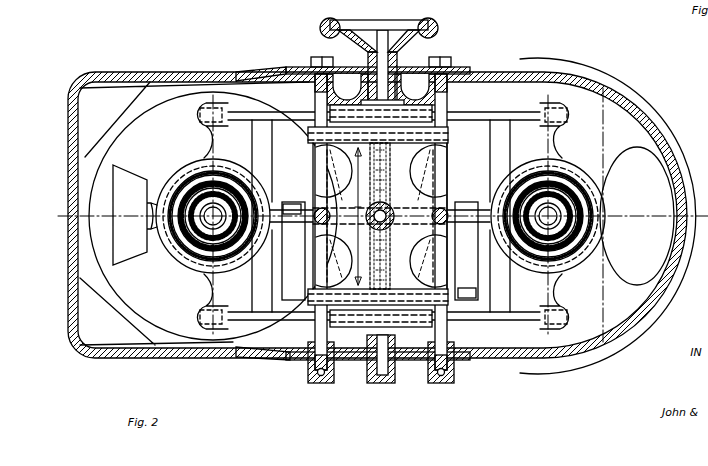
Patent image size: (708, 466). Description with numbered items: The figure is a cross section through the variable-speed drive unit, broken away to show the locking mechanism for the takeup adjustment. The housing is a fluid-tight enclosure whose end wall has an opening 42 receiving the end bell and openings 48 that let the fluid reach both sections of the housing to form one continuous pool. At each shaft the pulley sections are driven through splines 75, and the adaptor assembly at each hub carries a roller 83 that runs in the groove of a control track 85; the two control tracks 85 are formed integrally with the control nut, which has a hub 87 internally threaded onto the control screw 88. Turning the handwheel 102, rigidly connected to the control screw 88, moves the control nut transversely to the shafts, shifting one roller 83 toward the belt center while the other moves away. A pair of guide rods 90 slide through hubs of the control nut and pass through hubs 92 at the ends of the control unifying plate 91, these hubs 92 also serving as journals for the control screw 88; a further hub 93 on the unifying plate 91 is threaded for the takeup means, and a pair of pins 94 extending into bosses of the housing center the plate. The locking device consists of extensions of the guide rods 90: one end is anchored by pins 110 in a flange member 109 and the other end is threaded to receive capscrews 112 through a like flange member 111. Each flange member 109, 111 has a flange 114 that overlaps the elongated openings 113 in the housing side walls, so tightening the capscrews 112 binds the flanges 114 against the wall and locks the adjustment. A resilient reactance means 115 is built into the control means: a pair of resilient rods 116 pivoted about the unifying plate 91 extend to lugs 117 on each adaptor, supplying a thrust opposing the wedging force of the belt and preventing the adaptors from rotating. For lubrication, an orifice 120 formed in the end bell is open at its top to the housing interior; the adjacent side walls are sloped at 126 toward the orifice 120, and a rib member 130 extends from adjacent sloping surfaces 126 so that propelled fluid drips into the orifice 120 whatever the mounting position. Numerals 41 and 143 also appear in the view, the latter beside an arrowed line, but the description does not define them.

The opening 42 is at (178, 100).
The openings 48 is at (652, 156).
The splines 75 is at (233, 193).
The roller 83 is at (378, 216).
The control track 85 is at (300, 273).
The hub 87 is at (380, 225).
The control screw 88 is at (388, 62).
The guide rod 90 is at (315, 102).
The control unifying plate 91 is at (420, 238).
The hub 92 is at (450, 138).
The hub 93 is at (390, 208).
The pins 94 is at (320, 208).
The pin 41 is at (374, 208).
The handwheel 102 is at (437, 26).
The flange member 109 is at (306, 372).
The pins 110 is at (322, 378).
The flange member 111 is at (296, 67).
The capscrews 112 is at (322, 57).
The openings 113 is at (312, 86).
The flange 114 is at (290, 72).
The reactance means 115 is at (404, 102).
The resilient rods 116 is at (284, 120).
The lugs 117 is at (200, 128).
The orifice 120 is at (130, 178).
The sloped side wall 126 is at (197, 82).
The rib member 130 is at (140, 88).
The stroke dimension 143 is at (358, 216).